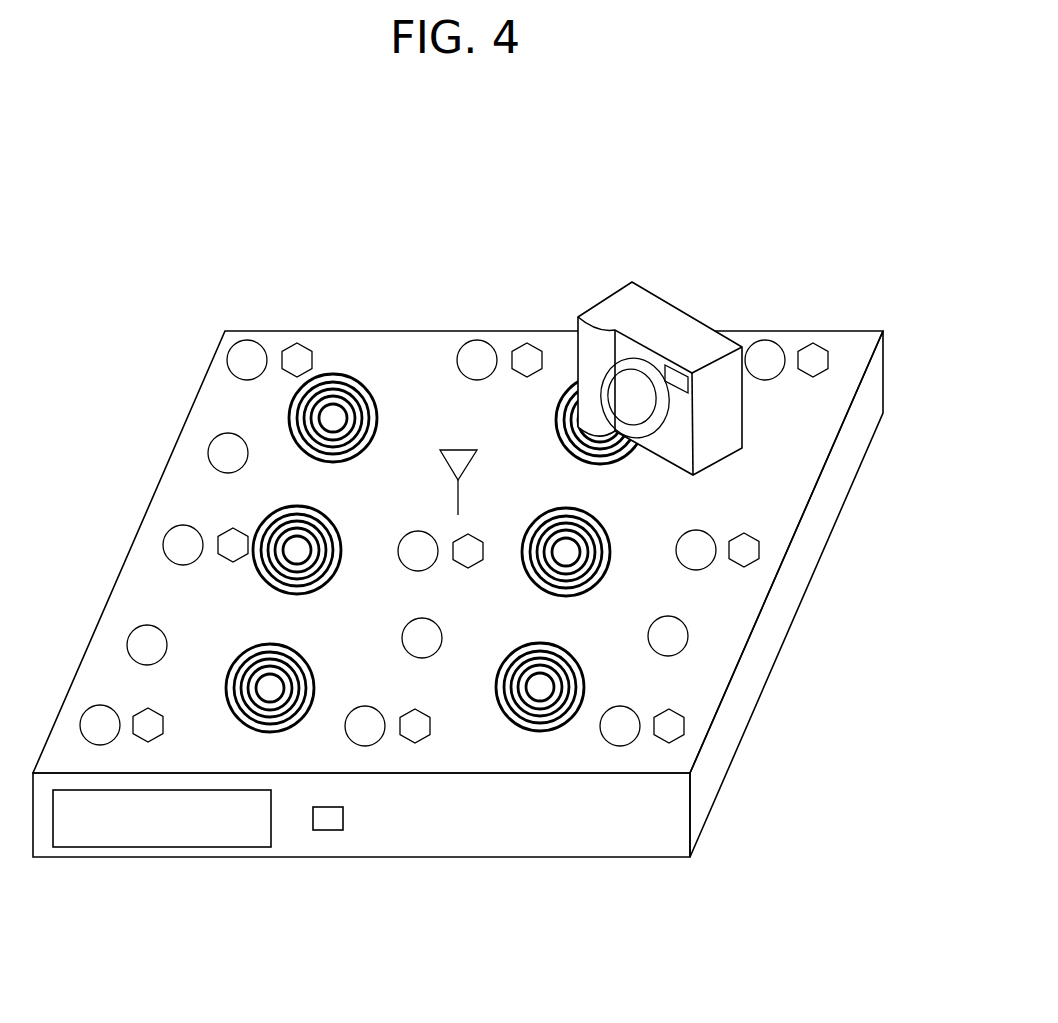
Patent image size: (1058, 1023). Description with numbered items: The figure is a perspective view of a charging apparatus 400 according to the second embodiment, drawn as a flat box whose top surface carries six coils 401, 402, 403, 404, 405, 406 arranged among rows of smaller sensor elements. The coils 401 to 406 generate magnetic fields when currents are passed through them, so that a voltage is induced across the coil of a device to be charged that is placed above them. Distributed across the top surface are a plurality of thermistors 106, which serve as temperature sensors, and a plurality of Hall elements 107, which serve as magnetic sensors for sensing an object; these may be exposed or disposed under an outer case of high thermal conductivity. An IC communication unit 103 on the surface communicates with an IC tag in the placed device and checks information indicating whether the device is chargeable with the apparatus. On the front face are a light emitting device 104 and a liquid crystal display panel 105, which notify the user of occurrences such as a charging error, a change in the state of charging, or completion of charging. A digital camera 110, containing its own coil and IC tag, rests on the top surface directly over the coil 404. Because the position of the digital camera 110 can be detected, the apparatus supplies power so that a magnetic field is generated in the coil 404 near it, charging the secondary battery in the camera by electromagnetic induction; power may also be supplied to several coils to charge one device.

The charging apparatus 400 is at (160, 270).
The coil 401 is at (373, 389).
The coil 402 is at (333, 525).
The coil 403 is at (308, 662).
The coil 404 is at (622, 463).
The coil 405 is at (611, 543).
The coil 406 is at (580, 657).
The IC communication unit 103 is at (460, 442).
The light emitting device (LED) 104 is at (330, 818).
The liquid crystal display (LCD) panel 105 is at (163, 847).
The thermistor 106 is at (767, 340).
The Hall element 107 is at (830, 342).
The digital camera 110 is at (658, 297).